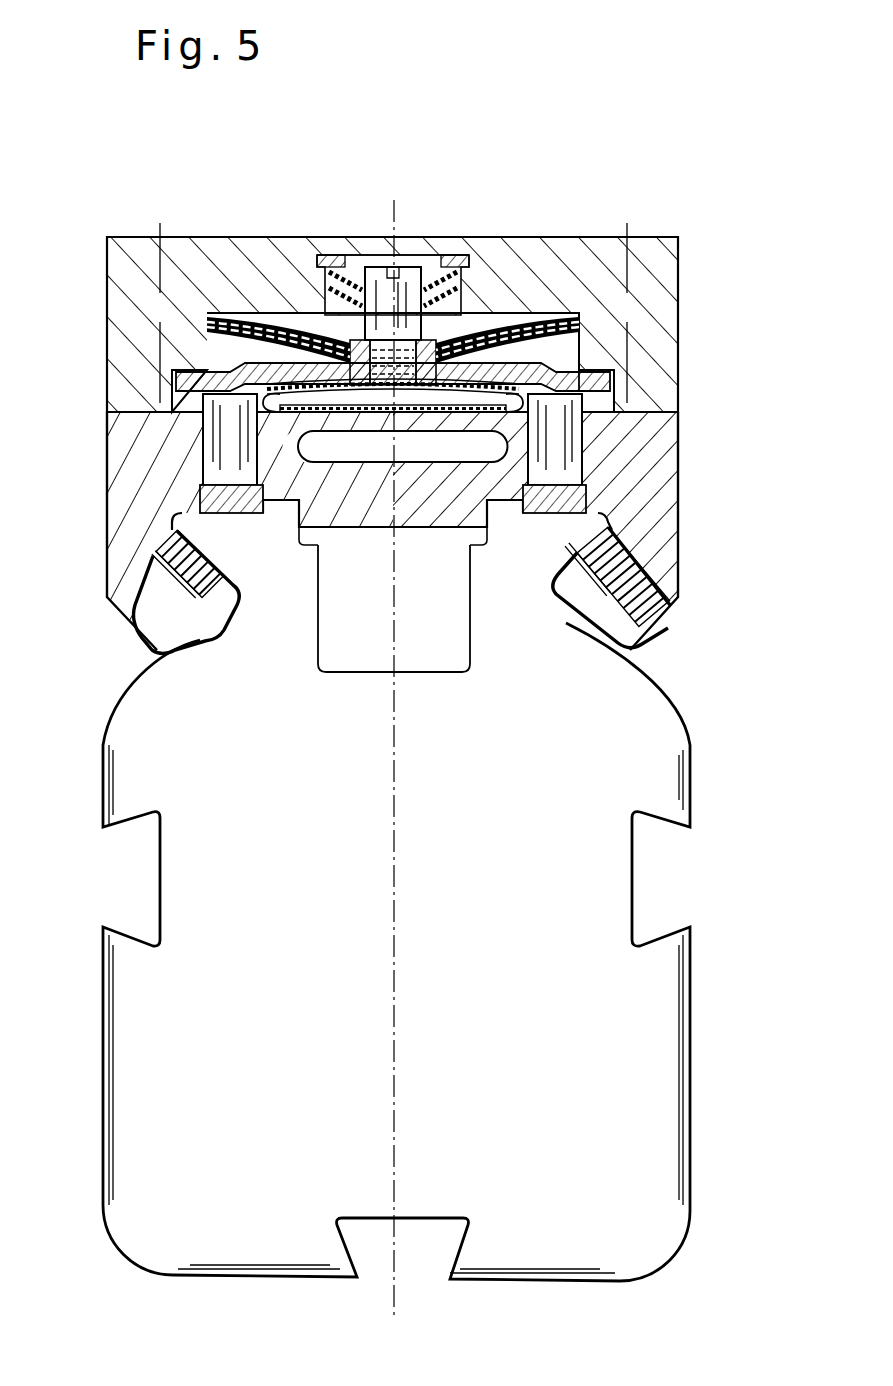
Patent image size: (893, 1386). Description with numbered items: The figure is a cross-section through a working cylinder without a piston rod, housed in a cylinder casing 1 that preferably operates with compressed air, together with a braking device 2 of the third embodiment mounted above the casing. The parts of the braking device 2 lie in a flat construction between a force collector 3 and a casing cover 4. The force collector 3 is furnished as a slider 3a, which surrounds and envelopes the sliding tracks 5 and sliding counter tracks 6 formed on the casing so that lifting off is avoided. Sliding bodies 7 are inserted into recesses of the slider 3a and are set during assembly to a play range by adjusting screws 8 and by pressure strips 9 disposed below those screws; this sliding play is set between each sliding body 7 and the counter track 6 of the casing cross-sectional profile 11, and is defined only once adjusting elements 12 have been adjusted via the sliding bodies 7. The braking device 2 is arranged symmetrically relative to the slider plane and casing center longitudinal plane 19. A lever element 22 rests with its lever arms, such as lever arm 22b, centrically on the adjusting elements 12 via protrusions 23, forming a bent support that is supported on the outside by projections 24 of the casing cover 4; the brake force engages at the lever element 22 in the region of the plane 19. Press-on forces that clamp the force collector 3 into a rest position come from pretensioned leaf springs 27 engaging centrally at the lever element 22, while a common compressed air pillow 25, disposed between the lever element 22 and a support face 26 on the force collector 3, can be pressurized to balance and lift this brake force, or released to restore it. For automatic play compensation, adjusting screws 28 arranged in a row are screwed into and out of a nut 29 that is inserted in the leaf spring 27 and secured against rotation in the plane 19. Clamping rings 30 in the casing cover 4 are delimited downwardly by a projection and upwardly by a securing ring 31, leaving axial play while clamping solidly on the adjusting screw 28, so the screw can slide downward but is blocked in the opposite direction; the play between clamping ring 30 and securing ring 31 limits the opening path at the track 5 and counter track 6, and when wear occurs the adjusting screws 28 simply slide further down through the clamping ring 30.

The cylinder casing 1 is at (693, 797).
The braking device 2 is at (486, 230).
The force collector 3 is at (680, 470).
The slider 3a is at (653, 433).
The casing cover 4 is at (123, 298).
The sliding tracks 5 is at (547, 523).
The sliding counter tracks 6 is at (563, 565).
The sliding bodies 7 is at (183, 543).
The adjusting screws 8 is at (670, 600).
The pressure strips 9 is at (113, 600).
The casing cross-sectional profile 11 is at (690, 740).
The adjusting elements 12 is at (217, 443).
The casing center longitudinal plane 19 is at (394, 200).
The lever element 22 is at (163, 367).
The lever arm 22b is at (613, 373).
The protrusions 23 is at (262, 400).
The projections 24 is at (152, 237).
The compressed air pillow 25 is at (280, 370).
The support face 26 is at (470, 288).
The leaf springs 27 is at (208, 318).
The adjusting screws 28 is at (395, 270).
The nut 29 is at (355, 348).
The clamping rings 30 is at (445, 258).
The securing ring 31 is at (364, 350).